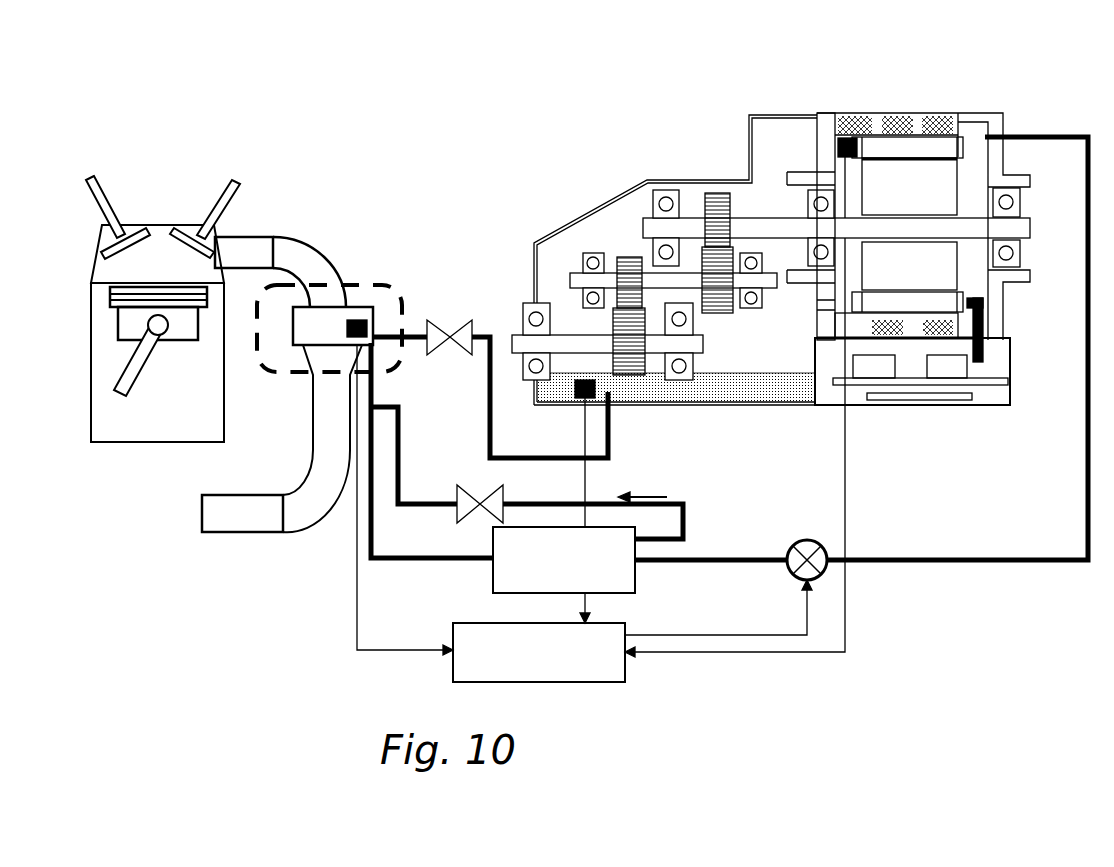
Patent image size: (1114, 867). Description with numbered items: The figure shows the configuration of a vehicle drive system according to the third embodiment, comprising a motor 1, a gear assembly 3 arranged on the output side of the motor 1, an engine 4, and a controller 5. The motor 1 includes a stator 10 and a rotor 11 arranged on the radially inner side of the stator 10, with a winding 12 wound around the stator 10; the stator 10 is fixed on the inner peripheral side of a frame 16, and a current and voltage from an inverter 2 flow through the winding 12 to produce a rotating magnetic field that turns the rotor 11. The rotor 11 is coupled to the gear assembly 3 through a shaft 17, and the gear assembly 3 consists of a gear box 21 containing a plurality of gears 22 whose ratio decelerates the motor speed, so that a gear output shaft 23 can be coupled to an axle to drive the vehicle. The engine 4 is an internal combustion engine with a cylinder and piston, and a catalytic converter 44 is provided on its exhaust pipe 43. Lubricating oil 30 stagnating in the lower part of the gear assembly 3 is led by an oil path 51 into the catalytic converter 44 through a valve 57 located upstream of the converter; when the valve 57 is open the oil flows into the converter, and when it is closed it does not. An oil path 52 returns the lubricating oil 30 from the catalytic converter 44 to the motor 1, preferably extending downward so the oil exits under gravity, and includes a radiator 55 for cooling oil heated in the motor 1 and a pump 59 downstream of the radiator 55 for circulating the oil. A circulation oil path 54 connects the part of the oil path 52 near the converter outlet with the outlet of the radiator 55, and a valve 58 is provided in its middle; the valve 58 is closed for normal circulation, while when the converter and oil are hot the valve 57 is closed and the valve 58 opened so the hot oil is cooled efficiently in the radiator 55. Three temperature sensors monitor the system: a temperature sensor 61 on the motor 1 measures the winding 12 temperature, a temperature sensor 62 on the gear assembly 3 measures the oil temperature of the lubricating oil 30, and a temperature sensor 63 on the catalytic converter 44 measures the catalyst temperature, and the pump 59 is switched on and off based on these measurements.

The motor 1 is at (882, 204).
The inverter 2 is at (912, 399).
The gear assembly 3 is at (755, 268).
The engine 4 is at (155, 228).
The controller 5 is at (508, 684).
The stator 10 is at (898, 148).
The rotor 11 is at (918, 180).
The winding 12 is at (855, 147).
The frame 16 is at (907, 342).
The shaft 17 is at (1020, 185).
The gear box 21 is at (620, 185).
The gears 22 is at (718, 196).
The gear output shaft 23 is at (513, 335).
The lubricating oil 30 is at (737, 386).
The exhaust pipe 43 is at (290, 250).
The catalytic converter 44 is at (351, 304).
The oil path 51 is at (490, 351).
The oil path 52 is at (432, 563).
The circulation oil path 54 is at (558, 473).
The radiator 55 is at (638, 577).
The valve 57 is at (465, 322).
The valve 58 is at (498, 492).
The pump 59 is at (800, 540).
The temperature sensor 61 is at (836, 148).
The temperature sensor 62 is at (580, 398).
The temperature sensor 63 is at (368, 330).